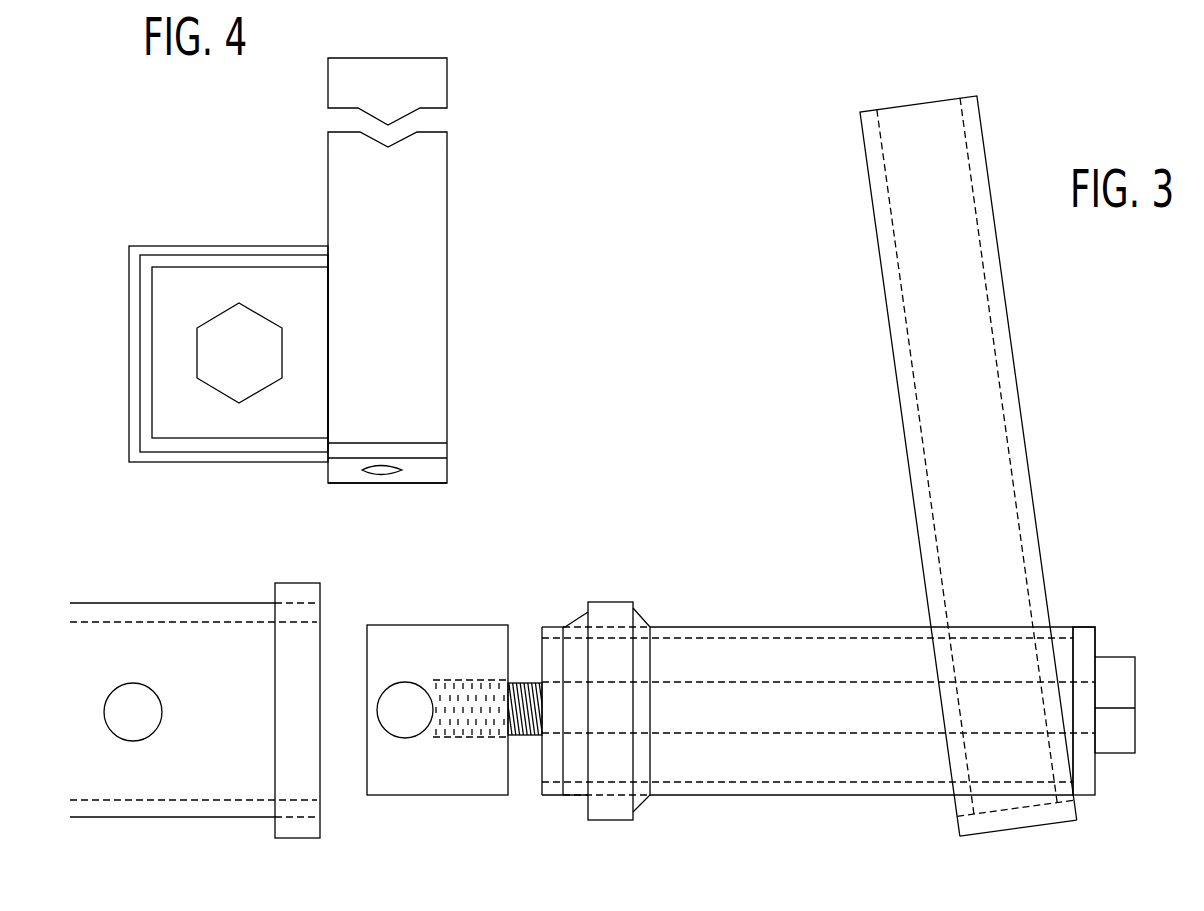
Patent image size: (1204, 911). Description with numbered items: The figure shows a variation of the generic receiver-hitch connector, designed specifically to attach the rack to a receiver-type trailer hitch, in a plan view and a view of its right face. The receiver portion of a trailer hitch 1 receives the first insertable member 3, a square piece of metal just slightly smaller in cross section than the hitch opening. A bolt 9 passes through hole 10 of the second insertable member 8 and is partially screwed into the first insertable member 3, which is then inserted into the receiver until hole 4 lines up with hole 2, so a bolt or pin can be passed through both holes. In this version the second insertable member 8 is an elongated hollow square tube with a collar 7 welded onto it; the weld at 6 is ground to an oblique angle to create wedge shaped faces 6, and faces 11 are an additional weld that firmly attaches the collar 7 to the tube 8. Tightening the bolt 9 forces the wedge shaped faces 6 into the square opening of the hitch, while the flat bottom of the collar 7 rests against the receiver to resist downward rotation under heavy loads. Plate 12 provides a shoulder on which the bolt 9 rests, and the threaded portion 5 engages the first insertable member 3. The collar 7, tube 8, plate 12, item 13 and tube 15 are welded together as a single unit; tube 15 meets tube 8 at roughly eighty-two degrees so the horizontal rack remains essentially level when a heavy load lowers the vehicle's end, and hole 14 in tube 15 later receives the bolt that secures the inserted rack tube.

In FIG. 3, the receiver portion of a trailer hitch 1 is at (308, 580).
In FIG. 3, the hole 2 is at (148, 682).
In FIG. 3, the first insertable member 3 is at (438, 620).
In FIG. 3, the hole 4 is at (407, 745).
In FIG. 3, the threaded bore 5 is at (468, 742).
In FIG. 3, the wedge shaped faces 6 is at (573, 612).
In FIG. 4, the collar 7 is at (243, 463).
In FIG. 3, the collar 7 is at (615, 592).
In FIG. 3, the second insertable member 8 is at (720, 617).
In FIG. 4, the bolt 9 is at (219, 303).
In FIG. 3, the bolt 9 is at (522, 677).
In FIG. 3, the hole 10 is at (1082, 738).
In FIG. 4, the faces 11 is at (307, 447).
In FIG. 3, the faces 11 is at (640, 803).
In FIG. 4, the plate 12 is at (162, 377).
In FIG. 3, the plate 12 is at (1100, 628).
In FIG. 4, the attachment means component 13 is at (448, 480).
In FIG. 3, the attachment means component 13 is at (1057, 827).
In FIG. 4, the hole 14 is at (377, 470).
In FIG. 3, the hole 14 is at (1020, 837).
In FIG. 4, the tube 15 is at (450, 222).
In FIG. 3, the tube 15 is at (868, 243).